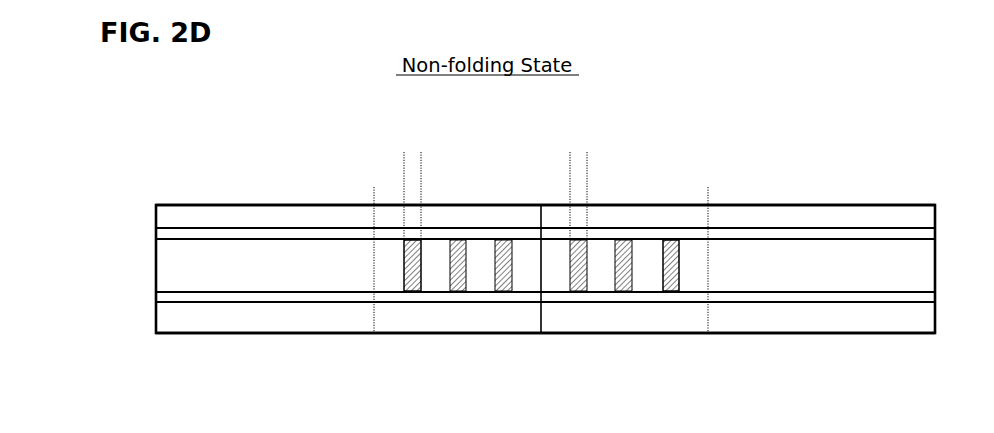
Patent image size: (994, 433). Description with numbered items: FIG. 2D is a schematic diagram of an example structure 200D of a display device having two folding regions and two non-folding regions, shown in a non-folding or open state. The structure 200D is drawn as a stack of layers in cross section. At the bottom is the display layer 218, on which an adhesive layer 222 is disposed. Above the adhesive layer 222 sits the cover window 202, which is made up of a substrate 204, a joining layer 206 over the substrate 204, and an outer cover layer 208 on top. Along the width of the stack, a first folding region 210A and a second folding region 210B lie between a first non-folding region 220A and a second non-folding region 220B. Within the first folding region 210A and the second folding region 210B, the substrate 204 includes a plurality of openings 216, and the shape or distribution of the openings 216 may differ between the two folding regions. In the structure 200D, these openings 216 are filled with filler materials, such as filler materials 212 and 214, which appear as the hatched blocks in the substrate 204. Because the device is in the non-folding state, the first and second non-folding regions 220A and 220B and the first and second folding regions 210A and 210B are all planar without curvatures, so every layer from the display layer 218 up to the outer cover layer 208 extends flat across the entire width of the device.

The example structure of the display device 200D is at (770, 94).
The cover window 202 is at (77, 211).
The substrate 204 is at (167, 257).
The joining layer 206 is at (167, 234).
The outer cover layer 208 is at (167, 211).
The first folding region 210A is at (374, 187).
The second folding region 210B is at (541, 187).
The filler material 212 is at (420, 258).
The filler material 214 is at (408, 272).
The openings 216 is at (421, 156).
The display layer 218 is at (167, 320).
The first non-folding region 220A is at (374, 187).
The second non-folding region 220B is at (934, 187).
The adhesive layer 222 is at (167, 295).